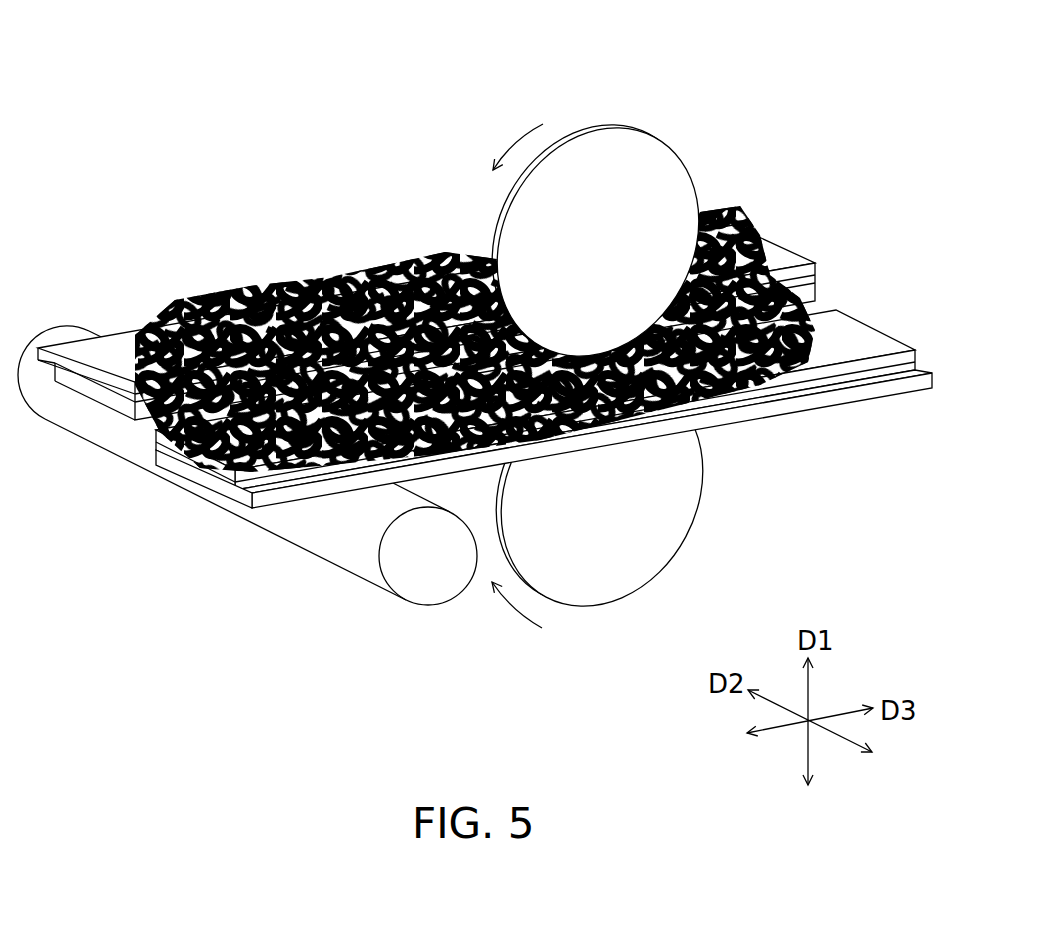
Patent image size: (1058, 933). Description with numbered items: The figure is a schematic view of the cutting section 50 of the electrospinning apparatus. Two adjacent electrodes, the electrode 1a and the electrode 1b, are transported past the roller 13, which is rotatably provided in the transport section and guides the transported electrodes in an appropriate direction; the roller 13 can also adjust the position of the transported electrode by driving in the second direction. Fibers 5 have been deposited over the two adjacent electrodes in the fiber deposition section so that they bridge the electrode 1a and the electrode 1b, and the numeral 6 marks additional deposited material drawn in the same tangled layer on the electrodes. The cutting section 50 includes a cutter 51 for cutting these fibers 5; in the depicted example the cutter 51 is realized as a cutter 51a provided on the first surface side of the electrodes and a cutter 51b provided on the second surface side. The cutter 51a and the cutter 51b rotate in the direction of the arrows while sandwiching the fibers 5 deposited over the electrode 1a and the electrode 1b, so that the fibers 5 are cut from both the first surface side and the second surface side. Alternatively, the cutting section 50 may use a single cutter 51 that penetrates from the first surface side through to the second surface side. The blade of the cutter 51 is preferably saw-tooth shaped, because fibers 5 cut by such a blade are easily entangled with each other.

The cutting section 50 is at (475, 368).
The cutter 51 is at (485, 349).
The cutter 51a is at (650, 177).
The cutter 51b is at (660, 543).
The electrode 1a is at (433, 250).
The electrode 1b is at (782, 405).
The fibers 5 is at (407, 280).
The binder 6 is at (327, 280).
The roller 13 is at (437, 578).